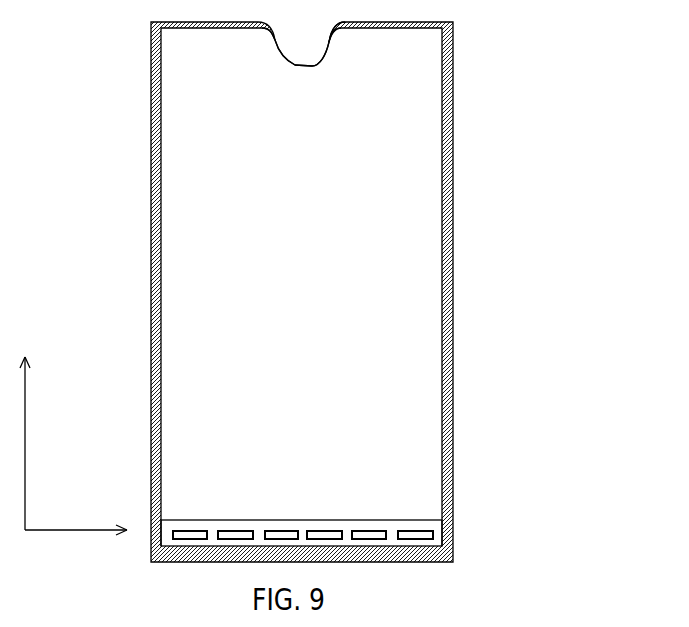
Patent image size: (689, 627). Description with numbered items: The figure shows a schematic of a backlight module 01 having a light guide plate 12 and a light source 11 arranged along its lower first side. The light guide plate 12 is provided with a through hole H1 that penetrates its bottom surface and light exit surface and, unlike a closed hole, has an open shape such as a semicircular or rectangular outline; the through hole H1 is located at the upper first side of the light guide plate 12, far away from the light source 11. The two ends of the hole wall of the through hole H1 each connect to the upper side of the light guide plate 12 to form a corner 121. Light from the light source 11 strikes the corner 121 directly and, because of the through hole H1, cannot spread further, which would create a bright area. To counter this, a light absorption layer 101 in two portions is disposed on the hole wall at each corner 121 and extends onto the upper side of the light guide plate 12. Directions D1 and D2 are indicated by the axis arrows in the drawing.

The backlight module 01 is at (93, 322).
The light guide plate 12 is at (363, 204).
The light absorption layer 101 is at (268, 30).
The corner 121 is at (343, 40).
The through hole H1 is at (300, 38).
The light source 11 is at (393, 538).
The first direction D1 is at (76, 518).
The second direction D2 is at (43, 443).